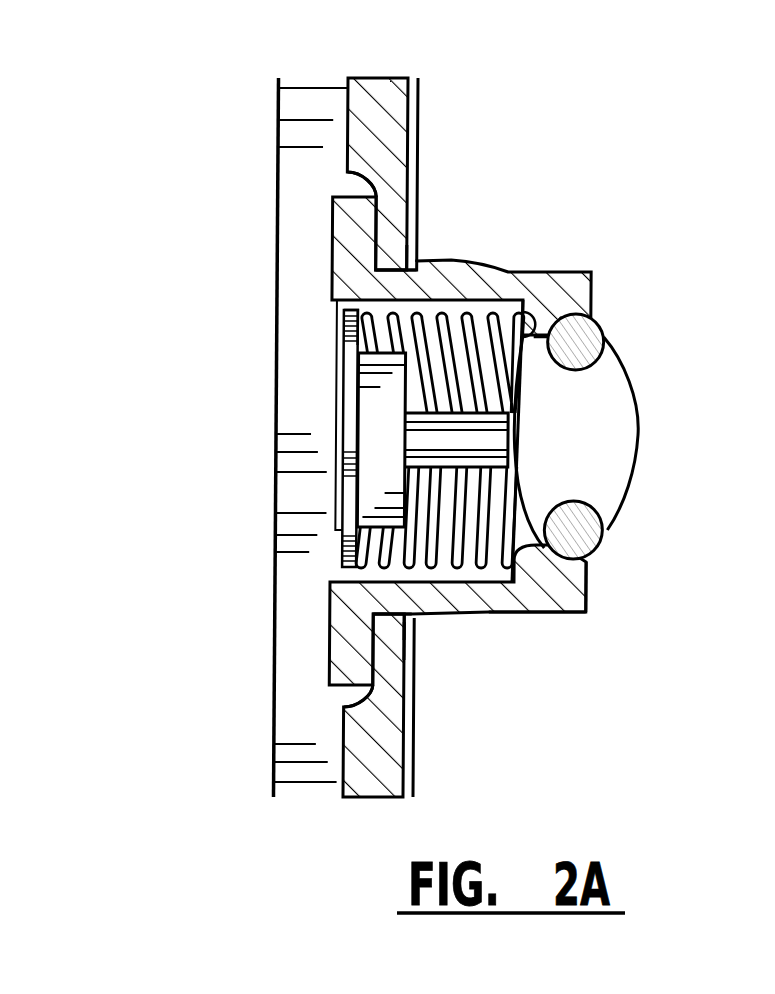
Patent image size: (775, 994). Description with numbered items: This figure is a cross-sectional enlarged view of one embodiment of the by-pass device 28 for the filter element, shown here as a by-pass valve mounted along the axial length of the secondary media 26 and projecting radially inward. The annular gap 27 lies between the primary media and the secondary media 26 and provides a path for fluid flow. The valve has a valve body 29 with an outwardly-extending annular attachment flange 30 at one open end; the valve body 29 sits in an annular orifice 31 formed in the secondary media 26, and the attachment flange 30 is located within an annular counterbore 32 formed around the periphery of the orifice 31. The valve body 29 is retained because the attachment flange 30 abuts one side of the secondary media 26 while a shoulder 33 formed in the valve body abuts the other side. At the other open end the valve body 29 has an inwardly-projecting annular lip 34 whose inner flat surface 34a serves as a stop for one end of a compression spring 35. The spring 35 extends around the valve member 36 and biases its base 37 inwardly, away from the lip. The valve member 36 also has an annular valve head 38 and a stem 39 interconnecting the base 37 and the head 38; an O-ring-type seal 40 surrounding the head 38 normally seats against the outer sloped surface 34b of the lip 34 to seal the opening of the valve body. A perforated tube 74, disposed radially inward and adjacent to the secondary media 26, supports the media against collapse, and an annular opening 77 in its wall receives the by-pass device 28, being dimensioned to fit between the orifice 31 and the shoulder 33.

The secondary media 26 is at (405, 718).
The annular gap 27 is at (303, 727).
The by-pass device 28 is at (652, 123).
The valve body 29 is at (577, 613).
The attachment flange 30 is at (333, 235).
The annular orifice 31 is at (412, 262).
The annular counterbore 32 is at (347, 181).
The shoulder 33 is at (415, 260).
The annular lip 34 is at (540, 275).
The inner flat surface 34a is at (510, 582).
The outer sloped surface 34b is at (588, 590).
The compression spring 35 is at (347, 320).
The valve member 36 is at (347, 527).
The base 37 is at (347, 368).
The annular valve head 38 is at (583, 430).
The stem 39 is at (497, 443).
The O-ring-type seal 40 is at (590, 335).
The perforated tube 74 is at (412, 767).
The annular opening 77 is at (403, 640).